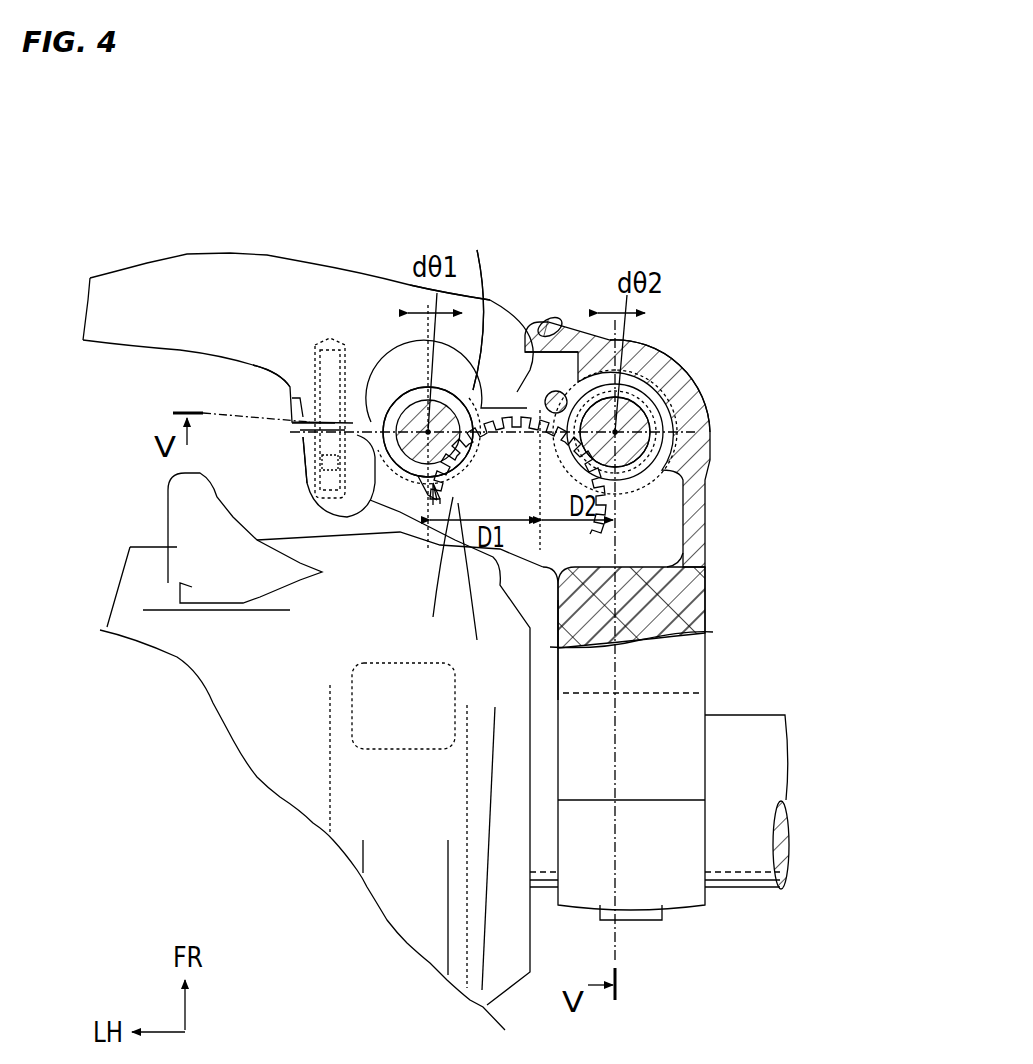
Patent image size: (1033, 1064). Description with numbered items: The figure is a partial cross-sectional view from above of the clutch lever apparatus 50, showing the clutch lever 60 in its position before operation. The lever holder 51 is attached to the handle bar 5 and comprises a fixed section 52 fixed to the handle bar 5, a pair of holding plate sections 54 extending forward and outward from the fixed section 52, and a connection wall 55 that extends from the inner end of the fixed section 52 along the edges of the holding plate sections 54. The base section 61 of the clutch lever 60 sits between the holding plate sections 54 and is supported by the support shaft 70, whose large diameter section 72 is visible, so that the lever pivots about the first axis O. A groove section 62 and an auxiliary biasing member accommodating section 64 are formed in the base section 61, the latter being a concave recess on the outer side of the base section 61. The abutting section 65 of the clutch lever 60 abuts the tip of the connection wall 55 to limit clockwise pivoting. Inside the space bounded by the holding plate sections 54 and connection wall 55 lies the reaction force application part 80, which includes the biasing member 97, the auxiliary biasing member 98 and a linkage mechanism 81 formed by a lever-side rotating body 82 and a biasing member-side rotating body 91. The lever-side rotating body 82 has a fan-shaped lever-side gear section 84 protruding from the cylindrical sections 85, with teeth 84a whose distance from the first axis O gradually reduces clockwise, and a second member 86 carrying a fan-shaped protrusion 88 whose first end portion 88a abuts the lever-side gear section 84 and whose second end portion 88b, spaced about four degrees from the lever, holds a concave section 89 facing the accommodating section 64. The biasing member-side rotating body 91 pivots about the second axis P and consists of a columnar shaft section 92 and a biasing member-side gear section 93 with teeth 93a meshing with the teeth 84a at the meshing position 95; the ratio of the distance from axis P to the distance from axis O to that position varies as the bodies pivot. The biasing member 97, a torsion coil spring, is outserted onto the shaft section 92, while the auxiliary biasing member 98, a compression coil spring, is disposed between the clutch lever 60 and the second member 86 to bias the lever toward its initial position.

The handle bar 5 is at (752, 885).
The clutch lever apparatus 50 is at (775, 172).
The lever holder 51 is at (710, 697).
The fixed section 52 is at (707, 668).
The holding plate sections 54 is at (657, 520).
The connection wall 55 is at (700, 437).
The clutch lever 60 is at (157, 278).
The base section 61 is at (477, 250).
The groove section 62 is at (372, 513).
The auxiliary biasing member accommodating section 64 is at (323, 370).
The abutting section 65 is at (562, 378).
The support shaft 70 is at (447, 264).
The large diameter section 72 is at (437, 407).
The reaction force application part 80 is at (556, 330).
The linkage mechanism 81 is at (387, 326).
The lever-side rotating body 82 is at (410, 407).
The lever-side gear section 84 is at (505, 405).
The teeth 84a is at (485, 585).
The cylindrical sections 85 is at (280, 377).
The second member 86 is at (305, 460).
The protrusion 88 is at (390, 500).
The first end portion 88a is at (435, 572).
The second end portion 88b is at (310, 407).
The concave section 89 is at (310, 468).
The biasing member-side rotating body 91 is at (695, 415).
The shaft section 92 is at (640, 463).
The biasing member-side gear section 93 is at (680, 563).
The teeth 93a is at (570, 540).
The meshing position 95 is at (548, 392).
The biasing member 97 is at (664, 348).
The auxiliary biasing member 98 is at (315, 425).